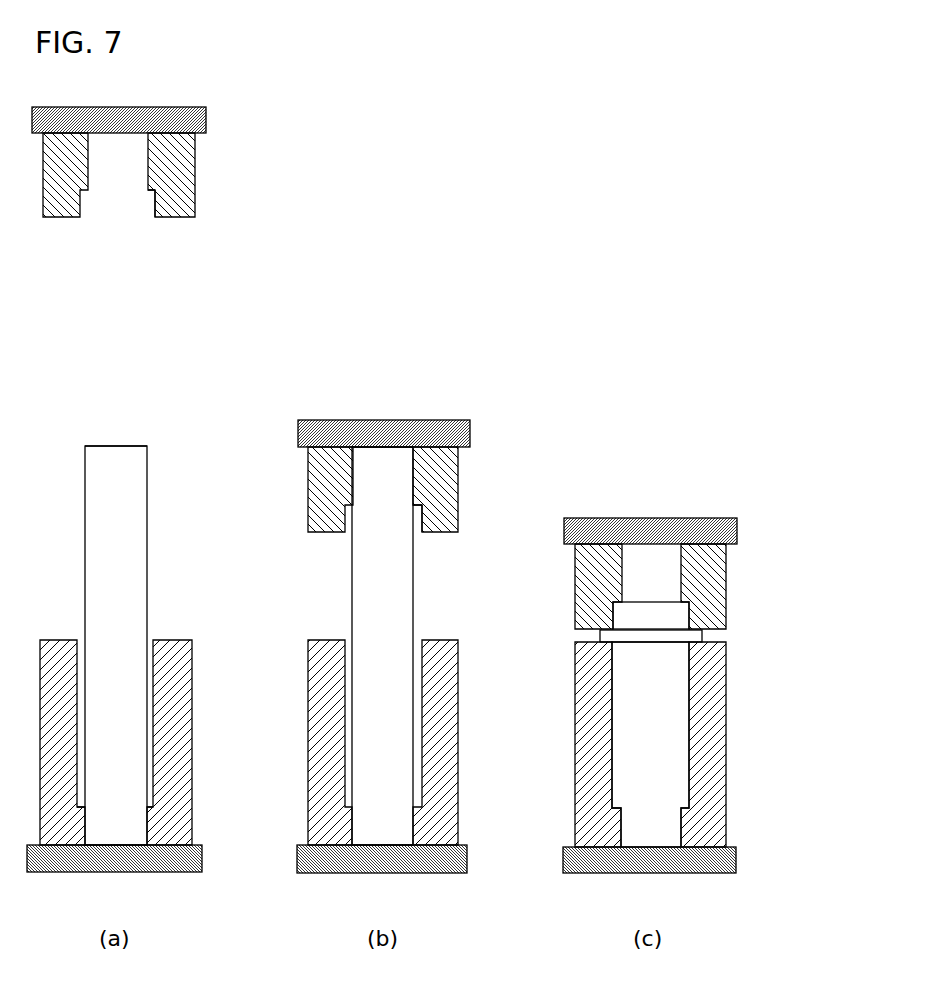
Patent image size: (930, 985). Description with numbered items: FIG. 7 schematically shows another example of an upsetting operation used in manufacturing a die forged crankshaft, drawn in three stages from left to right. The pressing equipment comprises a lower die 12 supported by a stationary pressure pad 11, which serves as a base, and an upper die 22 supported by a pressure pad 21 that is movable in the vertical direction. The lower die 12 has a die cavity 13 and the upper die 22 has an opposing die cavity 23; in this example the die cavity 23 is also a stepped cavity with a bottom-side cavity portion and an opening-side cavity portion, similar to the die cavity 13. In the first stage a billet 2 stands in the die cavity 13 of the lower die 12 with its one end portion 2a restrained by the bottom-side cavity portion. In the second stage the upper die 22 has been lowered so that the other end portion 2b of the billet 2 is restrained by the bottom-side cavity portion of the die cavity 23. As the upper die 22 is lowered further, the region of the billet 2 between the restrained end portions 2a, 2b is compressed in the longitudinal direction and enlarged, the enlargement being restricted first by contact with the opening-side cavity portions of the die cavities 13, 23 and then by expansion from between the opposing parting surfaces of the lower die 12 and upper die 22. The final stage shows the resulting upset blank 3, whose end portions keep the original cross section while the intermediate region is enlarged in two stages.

The billet 2 is at (150, 578).
The one end portion of the billet 2a is at (135, 822).
The other end portion of the billet 2b is at (138, 477).
The upset blank 3 is at (672, 615).
The stationary pressure pad 11 is at (196, 872).
The lower die 12 is at (193, 728).
The die cavity of the lower die 13 is at (150, 650).
The pressure pad 21 is at (199, 107).
The upper die 22 is at (196, 160).
The die cavity of the upper die 23 is at (155, 206).